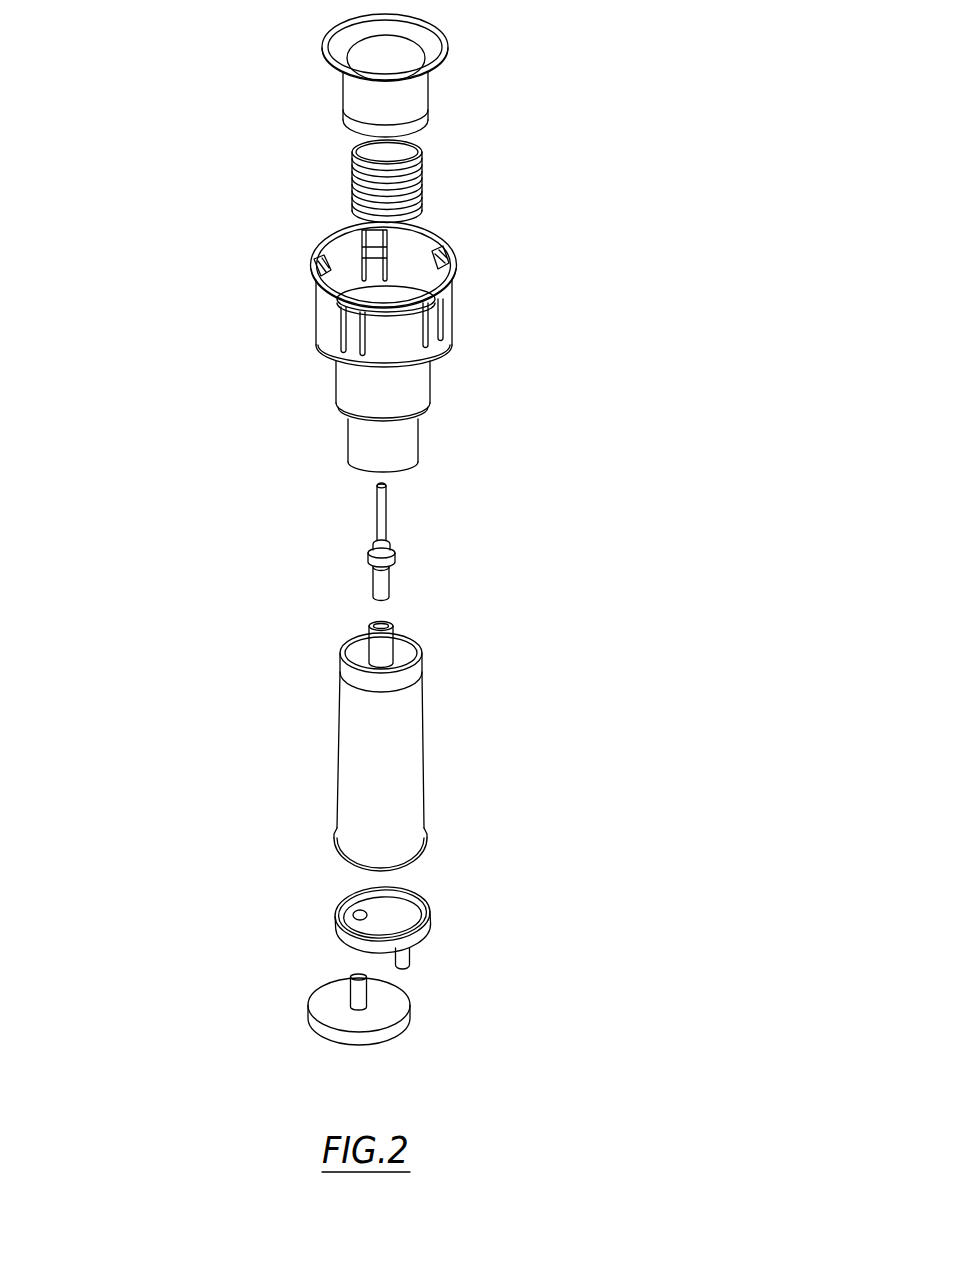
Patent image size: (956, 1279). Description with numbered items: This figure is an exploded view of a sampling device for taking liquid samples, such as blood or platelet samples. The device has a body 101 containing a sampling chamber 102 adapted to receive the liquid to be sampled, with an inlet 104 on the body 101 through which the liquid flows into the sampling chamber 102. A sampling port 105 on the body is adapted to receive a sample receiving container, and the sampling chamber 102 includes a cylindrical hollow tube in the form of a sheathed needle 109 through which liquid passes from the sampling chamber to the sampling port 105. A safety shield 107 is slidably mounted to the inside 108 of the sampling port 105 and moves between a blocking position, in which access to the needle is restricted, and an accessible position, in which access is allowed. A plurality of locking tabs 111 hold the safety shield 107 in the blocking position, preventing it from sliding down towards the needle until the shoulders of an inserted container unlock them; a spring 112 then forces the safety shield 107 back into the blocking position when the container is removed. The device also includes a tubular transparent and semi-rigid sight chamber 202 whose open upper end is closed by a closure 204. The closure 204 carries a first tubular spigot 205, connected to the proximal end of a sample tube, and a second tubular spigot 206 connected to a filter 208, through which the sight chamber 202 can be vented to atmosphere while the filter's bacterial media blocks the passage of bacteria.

The body 101 is at (403, 390).
The sampling chamber 102 is at (407, 445).
The inlet 104 is at (436, 483).
The sampling port 105 is at (488, 270).
The safety shield 107 is at (408, 100).
The inside of the sampling port 108 is at (343, 260).
The sheathed needle 109 is at (377, 525).
The locking tabs 111 is at (343, 260).
The spring 112 is at (422, 180).
The sight chamber 202 is at (402, 770).
The closure 204 is at (430, 922).
The first tubular spigot 205 is at (410, 961).
The second tubular spigot 206 is at (356, 992).
The filter 208 is at (400, 1022).